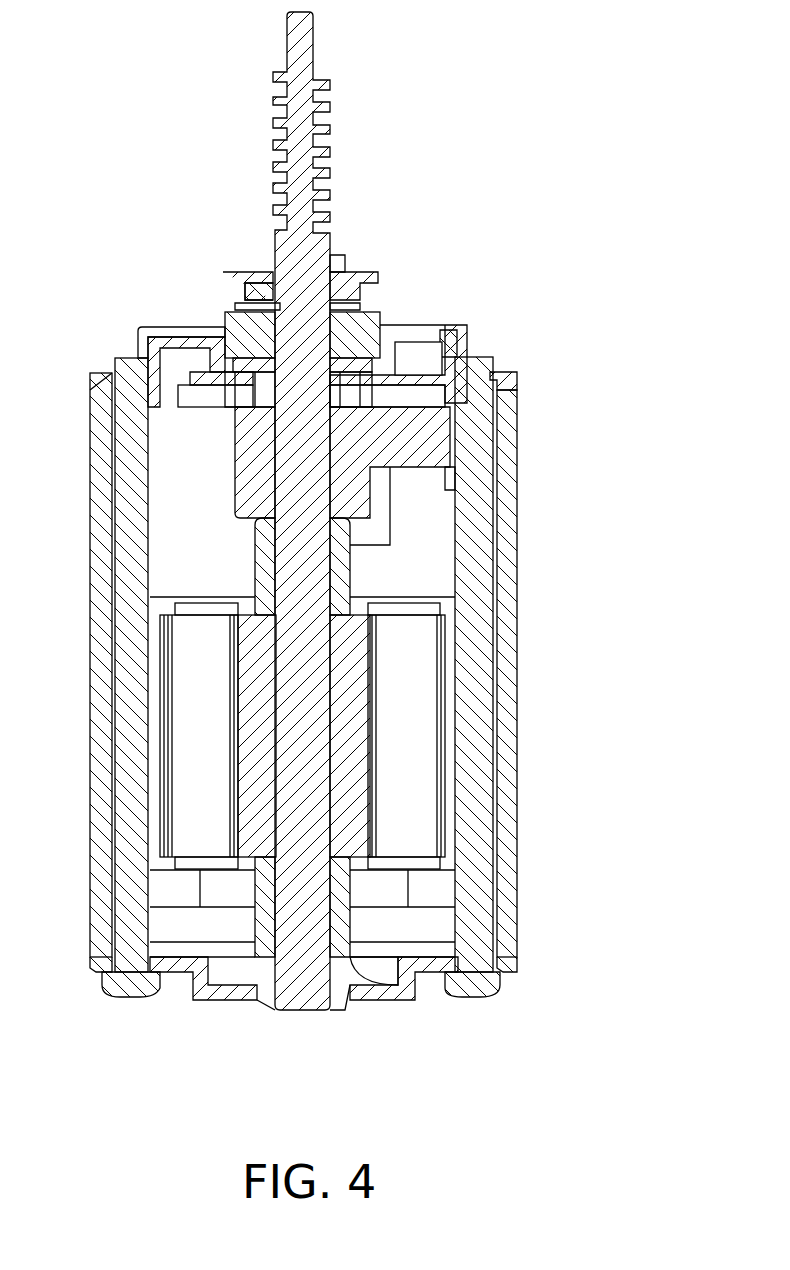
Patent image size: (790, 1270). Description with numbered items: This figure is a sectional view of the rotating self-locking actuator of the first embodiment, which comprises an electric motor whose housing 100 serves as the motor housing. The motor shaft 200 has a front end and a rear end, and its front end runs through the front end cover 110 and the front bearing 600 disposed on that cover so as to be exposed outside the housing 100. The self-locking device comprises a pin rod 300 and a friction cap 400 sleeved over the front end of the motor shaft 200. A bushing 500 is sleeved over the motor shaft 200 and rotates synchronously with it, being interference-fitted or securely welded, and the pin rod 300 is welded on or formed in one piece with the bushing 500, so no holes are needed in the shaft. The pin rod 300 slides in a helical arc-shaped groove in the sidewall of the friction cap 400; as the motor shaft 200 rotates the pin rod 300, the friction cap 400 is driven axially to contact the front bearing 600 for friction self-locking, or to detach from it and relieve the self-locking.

The housing 100 is at (512, 672).
The front end cover 110 is at (462, 327).
The motor shaft 200 is at (330, 115).
The pin rod 300 is at (245, 272).
The friction cap 400 is at (373, 273).
The bushing 500 is at (337, 270).
The front bearing 600 is at (225, 322).